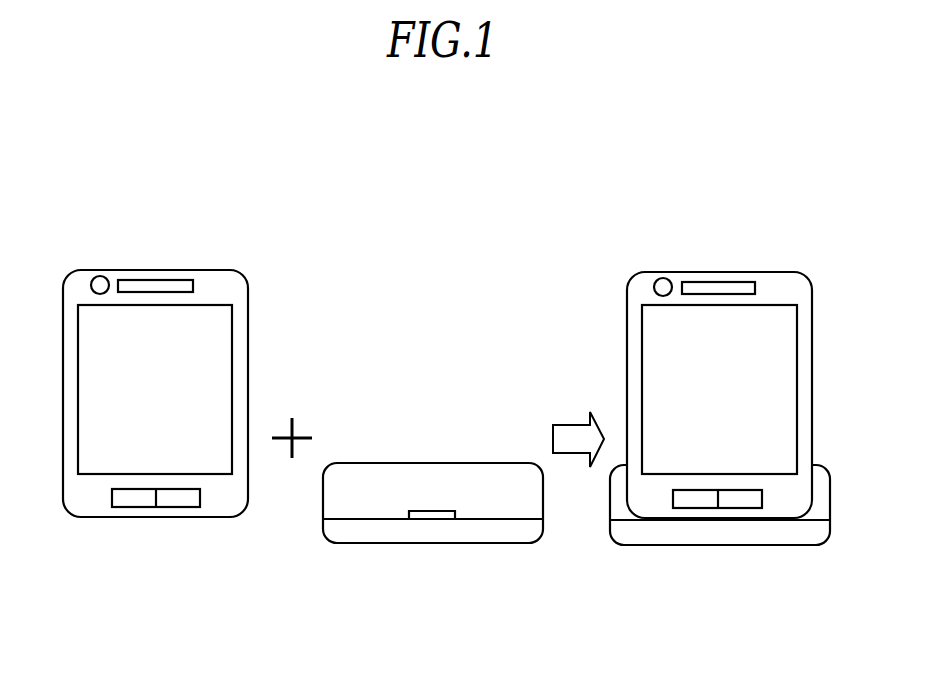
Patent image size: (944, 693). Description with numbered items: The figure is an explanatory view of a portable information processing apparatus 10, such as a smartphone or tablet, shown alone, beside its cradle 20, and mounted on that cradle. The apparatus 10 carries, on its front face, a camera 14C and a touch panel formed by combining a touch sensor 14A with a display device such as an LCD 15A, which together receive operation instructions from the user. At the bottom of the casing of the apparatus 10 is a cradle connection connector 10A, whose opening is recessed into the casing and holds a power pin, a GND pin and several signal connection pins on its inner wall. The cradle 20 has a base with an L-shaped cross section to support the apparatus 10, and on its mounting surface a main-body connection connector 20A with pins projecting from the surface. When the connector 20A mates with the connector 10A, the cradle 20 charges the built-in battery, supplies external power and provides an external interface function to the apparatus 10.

The information processing apparatus 10 is at (220, 270).
The cradle connection connector 10A is at (148, 517).
The touch sensor 14A is at (88, 302).
The camera 14C is at (105, 271).
The LCD 15A is at (207, 358).
The cradle 20 is at (512, 543).
The main-body connection connector 20A is at (429, 519).